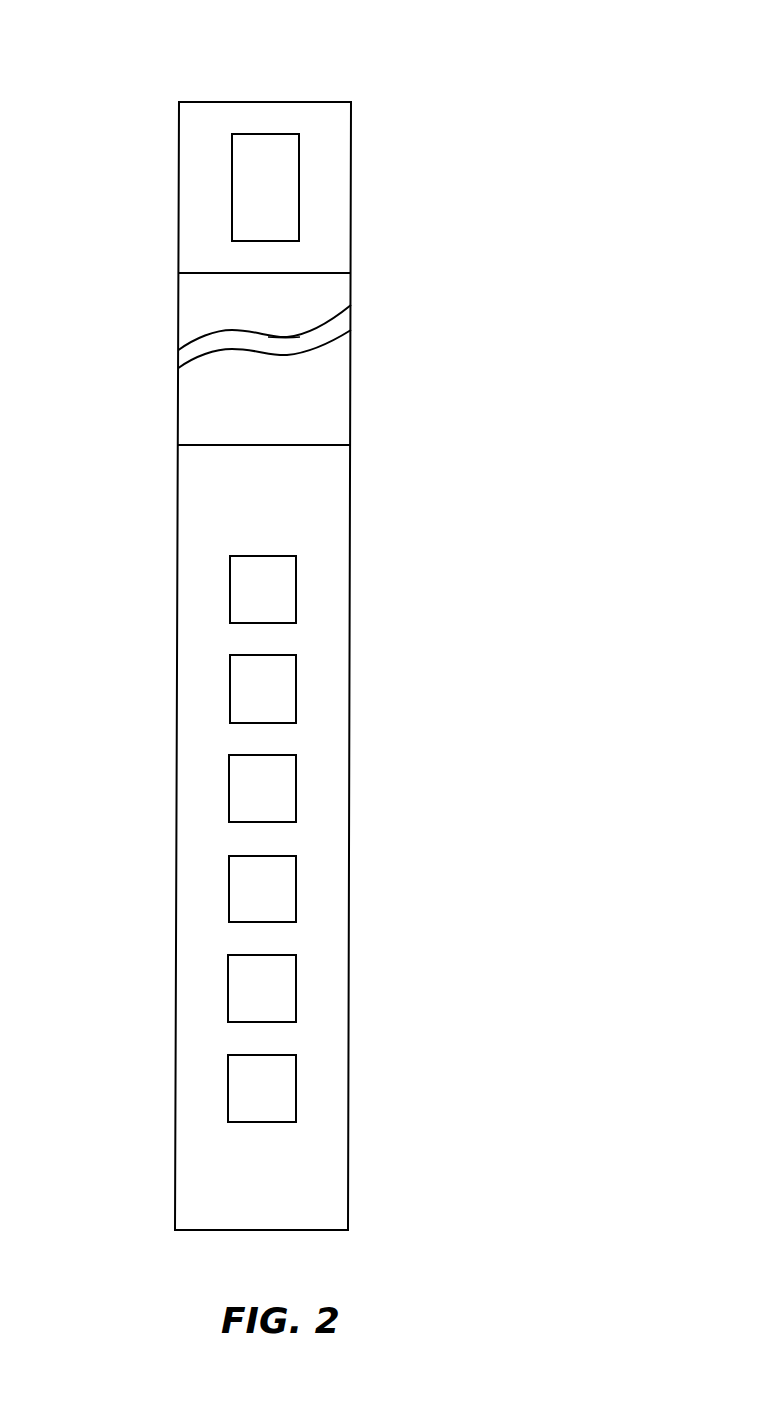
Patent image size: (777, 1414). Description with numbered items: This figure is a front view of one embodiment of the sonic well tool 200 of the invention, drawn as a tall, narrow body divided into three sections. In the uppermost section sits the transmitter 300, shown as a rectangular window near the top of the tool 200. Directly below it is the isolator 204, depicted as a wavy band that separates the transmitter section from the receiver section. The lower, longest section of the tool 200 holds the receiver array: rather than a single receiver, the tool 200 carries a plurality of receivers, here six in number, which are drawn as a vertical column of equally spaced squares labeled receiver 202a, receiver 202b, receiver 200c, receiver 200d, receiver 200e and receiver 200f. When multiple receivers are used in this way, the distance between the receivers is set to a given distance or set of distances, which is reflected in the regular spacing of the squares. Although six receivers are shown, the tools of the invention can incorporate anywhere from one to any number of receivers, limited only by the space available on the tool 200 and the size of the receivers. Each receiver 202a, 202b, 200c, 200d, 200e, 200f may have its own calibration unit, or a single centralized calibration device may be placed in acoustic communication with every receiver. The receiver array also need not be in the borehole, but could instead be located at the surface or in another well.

The sonic tool 200 is at (110, 87).
The transmitter 300 is at (327, 187).
The isolator 204 is at (300, 336).
The receiver 202a is at (333, 584).
The receiver 202b is at (333, 684).
The receiver 200c is at (332, 783).
The receiver 200d is at (333, 883).
The receiver 200e is at (332, 983).
The receiver 200f is at (331, 1083).